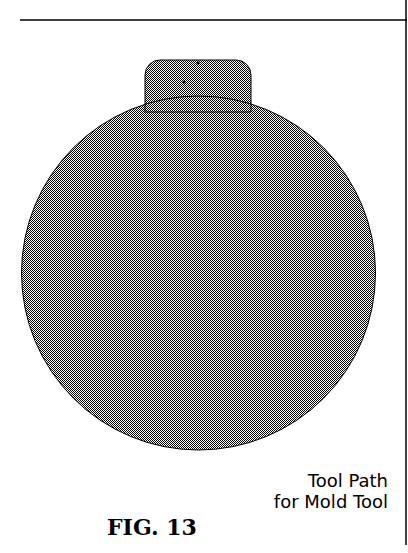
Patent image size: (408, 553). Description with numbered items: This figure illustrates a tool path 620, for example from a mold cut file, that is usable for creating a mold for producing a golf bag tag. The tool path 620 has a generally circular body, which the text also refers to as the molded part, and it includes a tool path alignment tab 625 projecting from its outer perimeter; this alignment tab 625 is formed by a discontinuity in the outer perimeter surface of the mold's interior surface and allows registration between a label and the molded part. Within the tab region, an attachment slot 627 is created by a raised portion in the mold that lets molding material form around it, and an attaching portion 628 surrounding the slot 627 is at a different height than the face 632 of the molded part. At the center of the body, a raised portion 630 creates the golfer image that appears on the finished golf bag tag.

The tool path 620 is at (205, 260).
The tool path alignment tab 625 is at (251, 82).
The attachment slot 627 is at (184, 82).
The attaching portion 628 is at (198, 63).
The raised portion 630 is at (205, 269).
The face 632 is at (348, 183).